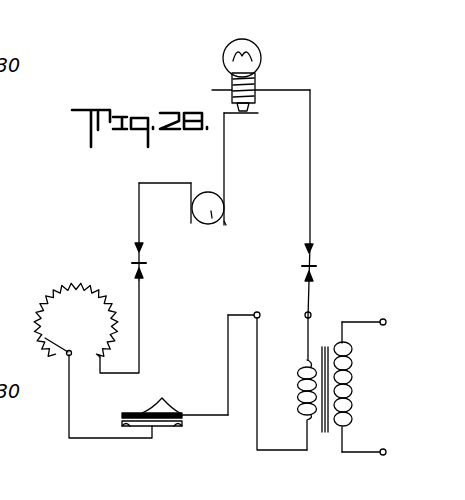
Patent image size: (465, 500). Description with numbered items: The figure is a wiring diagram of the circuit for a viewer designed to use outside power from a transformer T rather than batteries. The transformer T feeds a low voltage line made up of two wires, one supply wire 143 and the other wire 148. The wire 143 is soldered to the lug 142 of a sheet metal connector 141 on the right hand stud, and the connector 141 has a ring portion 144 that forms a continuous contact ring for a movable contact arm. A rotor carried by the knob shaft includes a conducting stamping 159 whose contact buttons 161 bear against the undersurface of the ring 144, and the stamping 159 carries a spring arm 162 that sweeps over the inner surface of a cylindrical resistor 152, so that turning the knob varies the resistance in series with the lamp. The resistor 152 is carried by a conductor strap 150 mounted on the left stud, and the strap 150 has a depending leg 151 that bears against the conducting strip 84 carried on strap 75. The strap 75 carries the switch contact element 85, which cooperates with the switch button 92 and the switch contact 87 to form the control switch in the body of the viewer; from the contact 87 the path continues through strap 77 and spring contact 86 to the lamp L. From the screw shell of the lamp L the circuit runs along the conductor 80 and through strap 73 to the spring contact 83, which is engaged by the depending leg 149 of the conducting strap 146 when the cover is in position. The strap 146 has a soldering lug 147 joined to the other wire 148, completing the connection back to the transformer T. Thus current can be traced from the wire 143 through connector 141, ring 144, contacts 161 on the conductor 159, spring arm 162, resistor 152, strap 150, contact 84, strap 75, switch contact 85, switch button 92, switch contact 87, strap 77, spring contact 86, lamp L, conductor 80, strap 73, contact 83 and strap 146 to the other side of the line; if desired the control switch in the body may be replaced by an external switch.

The lamp L is at (259, 47).
The conductor 80 is at (276, 90).
The strap 73 is at (311, 165).
The spring contact 86 is at (258, 114).
The strap 77 is at (226, 185).
The strap 75 is at (180, 182).
The switch contact element 85 is at (191, 226).
The switch button 92 is at (210, 221).
The switch contact 87 is at (227, 223).
The conducting strip 84 is at (112, 231).
The depending leg 151 is at (136, 252).
The spring contact 83 is at (337, 272).
The depending leg 149 is at (312, 258).
The conducting strap 146 is at (312, 275).
The soldering lug 147 is at (311, 313).
The cylindrical resistor 152 is at (65, 267).
The spring arm 162 is at (52, 340).
The conductor strap 150 is at (140, 362).
The conducting stamping 159 is at (68, 410).
The ring portion 144 is at (143, 412).
The contact buttons 161 is at (160, 405).
The sheet metal connector 141 is at (228, 355).
The soldering lug 142 is at (259, 313).
The low voltage supply wire 143 is at (268, 452).
The wire 148 is at (306, 327).
The transformer T is at (328, 447).